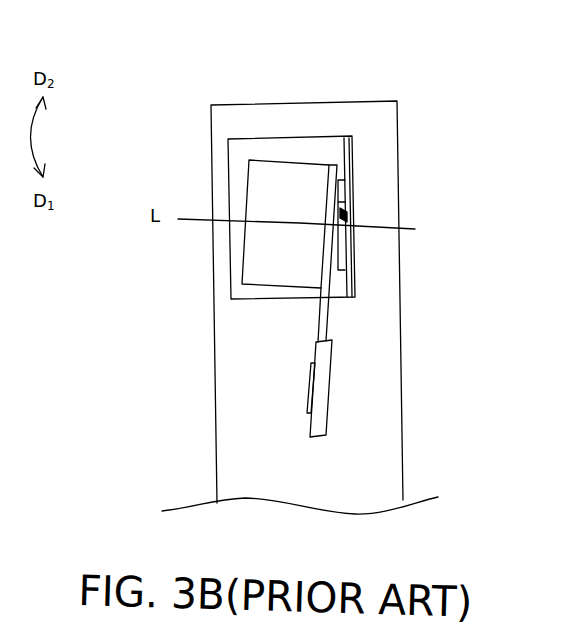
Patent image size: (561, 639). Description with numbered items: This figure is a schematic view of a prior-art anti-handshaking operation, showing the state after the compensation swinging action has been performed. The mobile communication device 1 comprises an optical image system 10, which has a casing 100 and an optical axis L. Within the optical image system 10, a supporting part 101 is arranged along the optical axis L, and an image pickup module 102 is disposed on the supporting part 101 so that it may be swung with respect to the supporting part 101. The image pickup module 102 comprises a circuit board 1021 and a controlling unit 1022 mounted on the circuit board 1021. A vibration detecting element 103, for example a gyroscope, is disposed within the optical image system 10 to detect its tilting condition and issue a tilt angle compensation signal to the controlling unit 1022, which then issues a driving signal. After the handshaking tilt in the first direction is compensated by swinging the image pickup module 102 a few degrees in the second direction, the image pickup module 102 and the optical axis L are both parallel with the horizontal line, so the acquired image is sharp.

The mobile communication device 1 is at (309, 31).
The optical image system 10 is at (298, 136).
The casing 100 is at (262, 137).
The supporting part 101 is at (346, 227).
The image pickup module 102 is at (258, 190).
The vibration detecting element 103 is at (351, 200).
The circuit board 1021 is at (319, 360).
The controlling unit 1022 is at (312, 388).